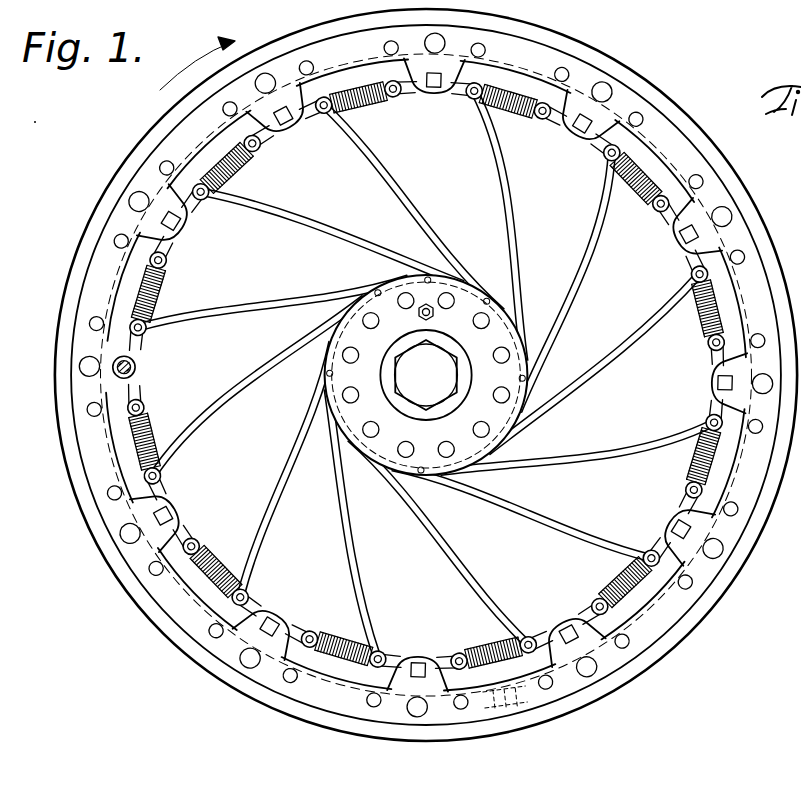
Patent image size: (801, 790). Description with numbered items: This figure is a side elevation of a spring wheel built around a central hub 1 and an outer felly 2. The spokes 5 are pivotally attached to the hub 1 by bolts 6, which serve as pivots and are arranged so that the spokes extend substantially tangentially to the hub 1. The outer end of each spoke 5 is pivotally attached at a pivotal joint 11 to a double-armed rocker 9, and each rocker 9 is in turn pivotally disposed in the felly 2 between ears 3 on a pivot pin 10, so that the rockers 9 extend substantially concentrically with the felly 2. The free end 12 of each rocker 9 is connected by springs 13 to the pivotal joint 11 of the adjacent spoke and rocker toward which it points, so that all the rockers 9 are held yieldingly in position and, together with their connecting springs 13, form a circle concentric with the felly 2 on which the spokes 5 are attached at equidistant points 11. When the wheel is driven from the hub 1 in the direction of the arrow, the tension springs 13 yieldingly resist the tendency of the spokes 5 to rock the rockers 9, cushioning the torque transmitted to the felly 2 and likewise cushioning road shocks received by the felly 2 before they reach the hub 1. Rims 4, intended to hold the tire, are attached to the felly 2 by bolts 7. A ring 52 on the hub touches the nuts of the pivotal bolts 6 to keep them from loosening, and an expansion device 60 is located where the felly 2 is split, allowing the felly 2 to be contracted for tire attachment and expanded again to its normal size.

The hub 1 is at (487, 408).
The felly 2 is at (667, 605).
The ears 3 is at (140, 364).
The rims 4 is at (630, 668).
The spokes 5 is at (253, 370).
The bolts 6 is at (505, 358).
The bolts 7 is at (703, 182).
The double-armed rockers 9 is at (602, 138).
The pivot pins 10 is at (286, 122).
The pivotal joints 11 is at (248, 590).
The free end 12 is at (147, 393).
The springs 13 is at (512, 118).
The ring 52 is at (273, 303).
The expansion device 60 is at (530, 707).